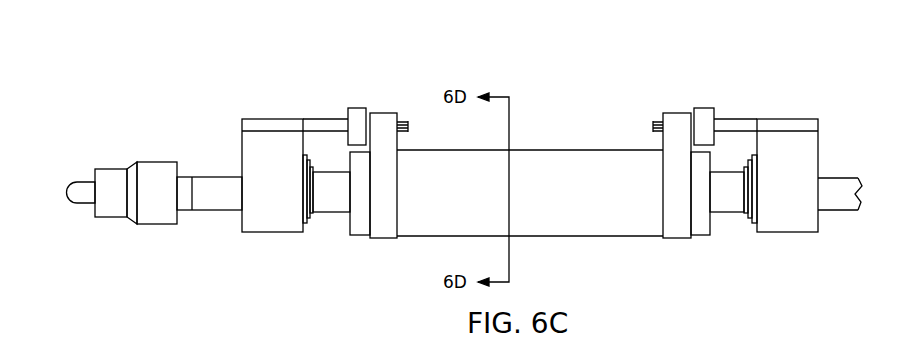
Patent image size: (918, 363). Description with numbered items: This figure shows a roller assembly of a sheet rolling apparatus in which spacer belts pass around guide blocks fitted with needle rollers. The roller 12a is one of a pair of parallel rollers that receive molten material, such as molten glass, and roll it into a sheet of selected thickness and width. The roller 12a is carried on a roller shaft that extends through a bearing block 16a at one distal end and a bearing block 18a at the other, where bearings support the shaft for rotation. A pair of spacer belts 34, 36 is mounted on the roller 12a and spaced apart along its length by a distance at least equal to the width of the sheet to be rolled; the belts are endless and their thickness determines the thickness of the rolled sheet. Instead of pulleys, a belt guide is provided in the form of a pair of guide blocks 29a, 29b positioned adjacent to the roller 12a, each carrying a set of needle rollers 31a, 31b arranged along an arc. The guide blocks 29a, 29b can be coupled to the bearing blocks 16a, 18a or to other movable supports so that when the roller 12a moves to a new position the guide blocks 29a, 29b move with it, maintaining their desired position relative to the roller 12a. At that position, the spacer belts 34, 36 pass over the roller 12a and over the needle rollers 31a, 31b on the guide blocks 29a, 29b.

The roller 12a is at (552, 236).
The bearing block 16a is at (263, 145).
The bearing block 18a is at (788, 147).
The guide block 29a is at (357, 113).
The guide block 29b is at (705, 117).
The needle rollers 31a is at (404, 122).
The needle rollers 31b is at (658, 120).
The spacer belt 34 is at (383, 118).
The spacer belt 36 is at (677, 118).